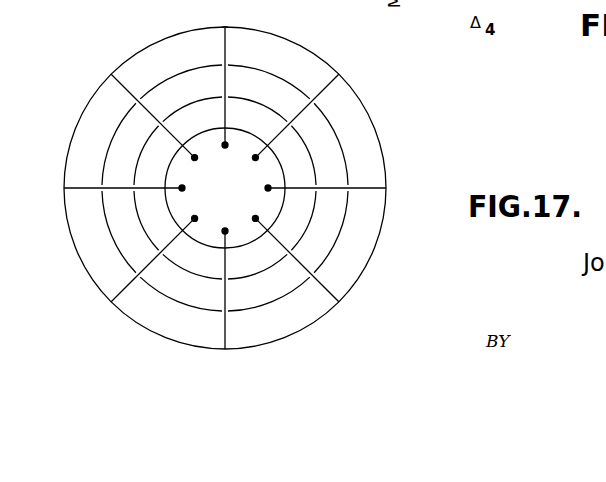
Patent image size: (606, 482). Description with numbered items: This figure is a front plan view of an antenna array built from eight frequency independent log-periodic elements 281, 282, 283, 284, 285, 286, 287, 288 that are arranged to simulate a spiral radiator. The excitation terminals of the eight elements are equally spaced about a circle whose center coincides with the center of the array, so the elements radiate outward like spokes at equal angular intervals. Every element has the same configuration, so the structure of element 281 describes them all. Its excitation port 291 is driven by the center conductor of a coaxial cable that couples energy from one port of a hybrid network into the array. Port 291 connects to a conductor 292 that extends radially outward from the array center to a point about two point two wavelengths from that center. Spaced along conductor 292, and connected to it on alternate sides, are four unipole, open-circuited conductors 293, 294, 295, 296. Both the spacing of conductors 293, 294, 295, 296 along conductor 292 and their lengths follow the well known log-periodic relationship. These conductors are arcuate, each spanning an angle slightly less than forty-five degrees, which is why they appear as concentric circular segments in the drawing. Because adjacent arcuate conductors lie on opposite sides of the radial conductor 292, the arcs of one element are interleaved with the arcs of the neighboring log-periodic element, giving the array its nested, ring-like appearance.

The log-periodic element 281 is at (222, 52).
The log-periodic element 282 is at (319, 85).
The log-periodic element 283 is at (364, 192).
The log-periodic element 284 is at (322, 294).
The log-periodic element 285 is at (222, 334).
The log-periodic element 286 is at (121, 289).
The log-periodic element 287 is at (73, 185).
The log-periodic element 288 is at (128, 84).
The excitation port 291 is at (225, 145).
The conductor 292 is at (230, 37).
The unipole open-circuited conductor 293 is at (259, 115).
The unipole open-circuited conductor 294 is at (178, 110).
The unipole open-circuited conductor 295 is at (243, 65).
The unipole open-circuited conductor 296 is at (157, 40).